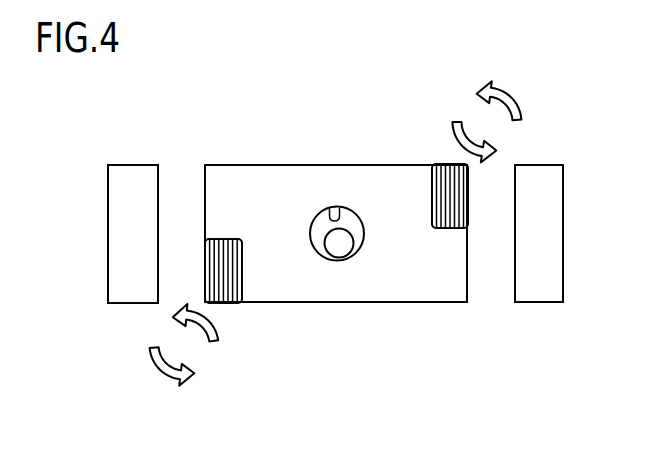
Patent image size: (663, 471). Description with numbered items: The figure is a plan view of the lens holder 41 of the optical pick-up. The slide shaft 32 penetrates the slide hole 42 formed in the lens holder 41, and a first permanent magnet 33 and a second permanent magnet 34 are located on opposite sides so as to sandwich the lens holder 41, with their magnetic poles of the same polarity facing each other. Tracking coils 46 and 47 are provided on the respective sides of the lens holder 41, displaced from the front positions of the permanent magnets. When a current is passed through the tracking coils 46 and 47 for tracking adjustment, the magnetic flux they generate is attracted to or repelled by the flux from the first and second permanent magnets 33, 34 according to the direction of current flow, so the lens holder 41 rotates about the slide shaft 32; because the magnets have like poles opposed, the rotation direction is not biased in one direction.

The lens holder 41 is at (288, 155).
The slide hole 42 is at (336, 218).
The slide shaft 32 is at (337, 250).
The tracking coil 46 is at (233, 297).
The tracking coil 47 is at (442, 165).
The first permanent magnet 33 is at (133, 285).
The second permanent magnet 34 is at (540, 288).